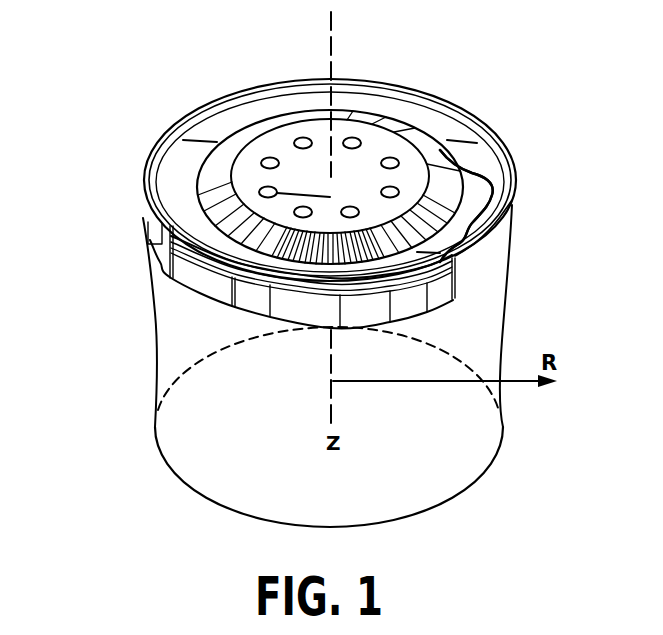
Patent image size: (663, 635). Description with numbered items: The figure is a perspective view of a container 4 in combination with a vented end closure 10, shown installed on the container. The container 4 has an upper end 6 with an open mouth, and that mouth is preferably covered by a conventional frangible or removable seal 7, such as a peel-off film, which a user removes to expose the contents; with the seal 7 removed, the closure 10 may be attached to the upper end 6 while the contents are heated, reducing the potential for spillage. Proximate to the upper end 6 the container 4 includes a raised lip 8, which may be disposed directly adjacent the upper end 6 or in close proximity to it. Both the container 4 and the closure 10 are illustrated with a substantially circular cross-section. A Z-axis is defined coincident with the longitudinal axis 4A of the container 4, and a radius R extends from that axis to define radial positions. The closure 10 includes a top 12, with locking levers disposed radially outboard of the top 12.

The container 4 is at (208, 338).
The longitudinal axis 4A is at (331, 345).
The upper end 6 is at (506, 152).
The removable seal 7 is at (510, 156).
The raised lip 8 is at (487, 256).
The vented end closure 10 is at (548, 155).
The top 12 is at (290, 157).